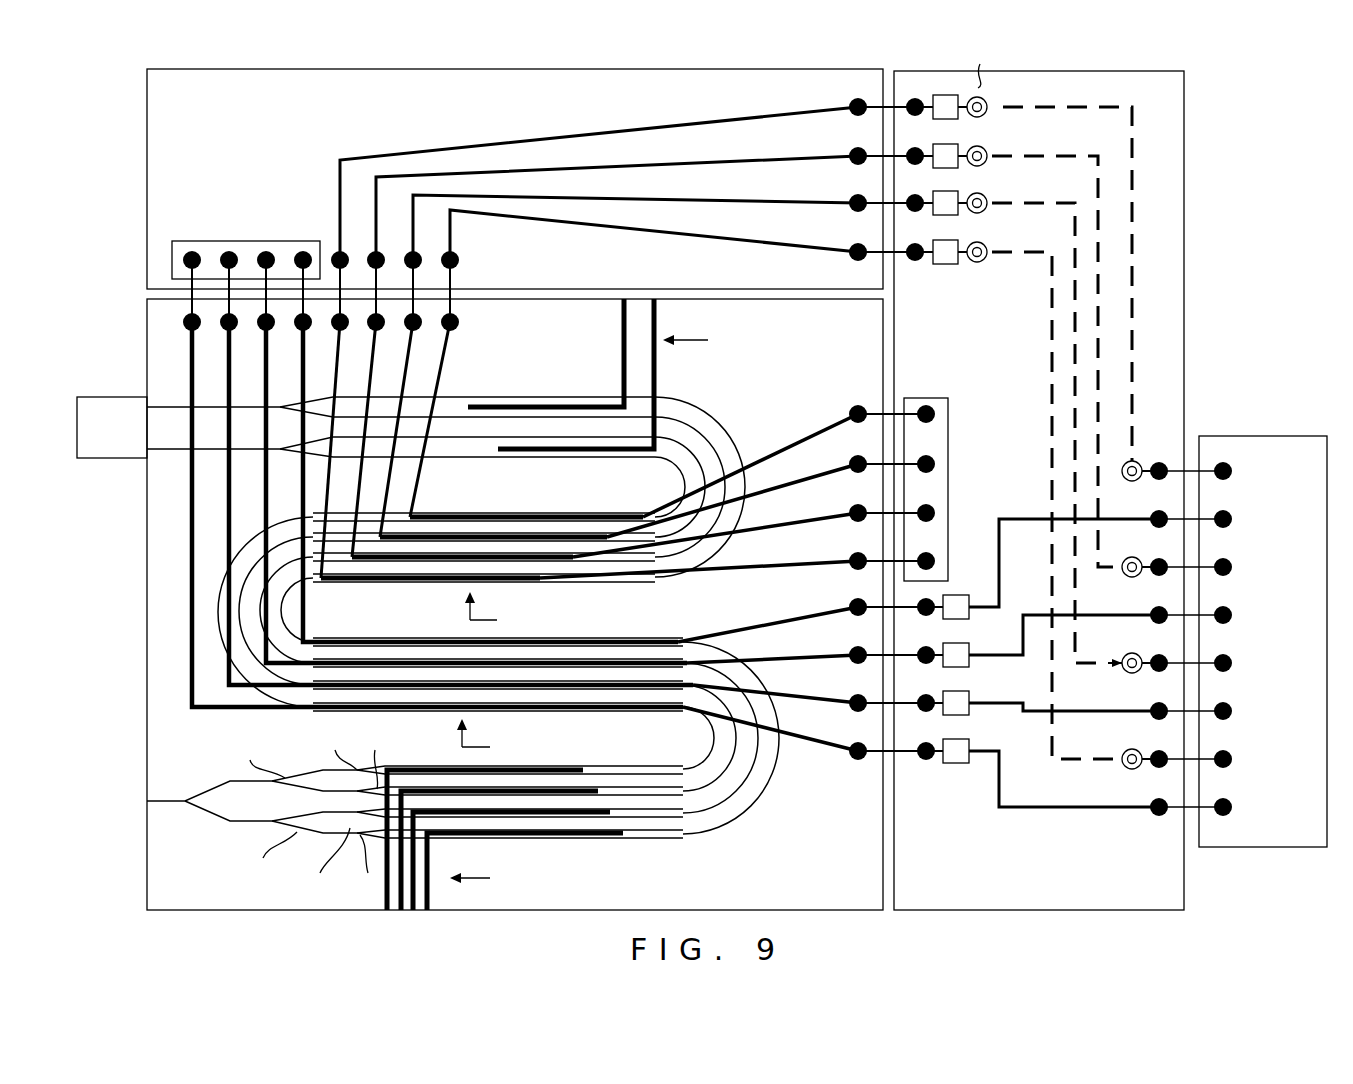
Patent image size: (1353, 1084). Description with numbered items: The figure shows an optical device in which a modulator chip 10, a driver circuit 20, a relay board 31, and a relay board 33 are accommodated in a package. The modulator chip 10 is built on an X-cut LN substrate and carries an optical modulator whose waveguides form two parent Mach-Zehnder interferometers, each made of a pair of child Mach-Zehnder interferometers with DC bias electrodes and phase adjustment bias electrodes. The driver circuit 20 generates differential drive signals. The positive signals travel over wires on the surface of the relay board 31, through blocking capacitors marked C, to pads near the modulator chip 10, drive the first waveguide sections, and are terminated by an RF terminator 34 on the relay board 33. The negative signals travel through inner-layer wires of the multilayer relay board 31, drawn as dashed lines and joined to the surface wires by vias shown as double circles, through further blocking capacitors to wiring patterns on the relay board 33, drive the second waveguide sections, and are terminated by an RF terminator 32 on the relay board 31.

The modulator chip 10 is at (147, 652).
The driver circuit 20 is at (1260, 436).
The relay board 31 is at (1186, 136).
The RF terminator 32 is at (922, 397).
The relay board 33 is at (147, 200).
The RF terminator 34 is at (258, 241).